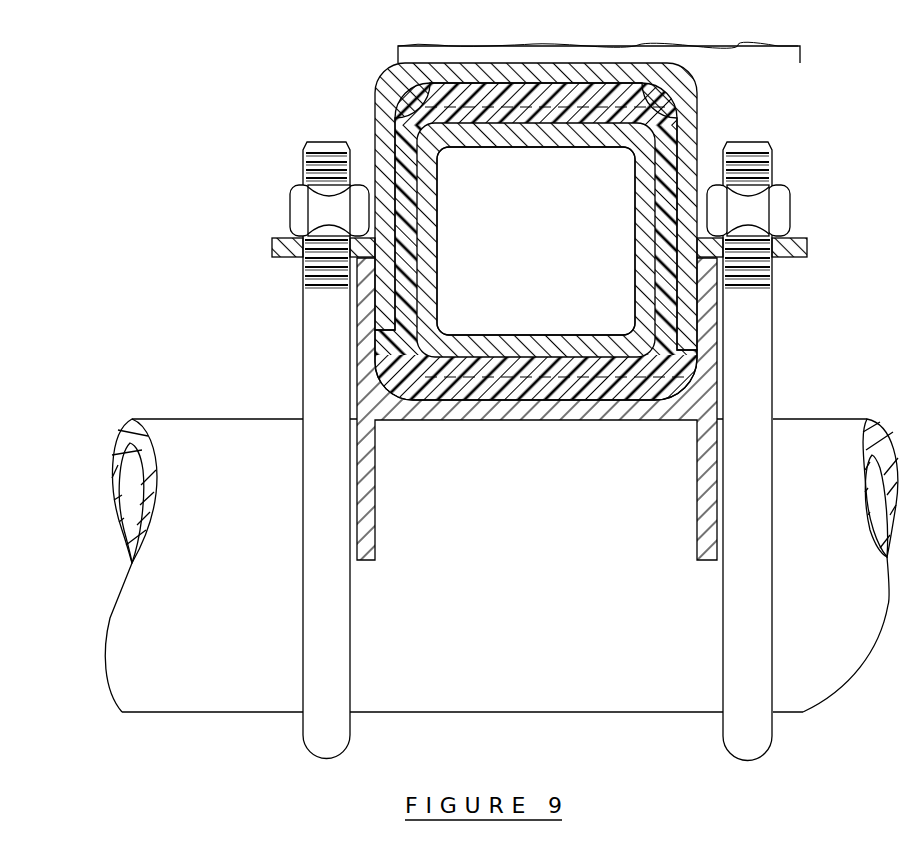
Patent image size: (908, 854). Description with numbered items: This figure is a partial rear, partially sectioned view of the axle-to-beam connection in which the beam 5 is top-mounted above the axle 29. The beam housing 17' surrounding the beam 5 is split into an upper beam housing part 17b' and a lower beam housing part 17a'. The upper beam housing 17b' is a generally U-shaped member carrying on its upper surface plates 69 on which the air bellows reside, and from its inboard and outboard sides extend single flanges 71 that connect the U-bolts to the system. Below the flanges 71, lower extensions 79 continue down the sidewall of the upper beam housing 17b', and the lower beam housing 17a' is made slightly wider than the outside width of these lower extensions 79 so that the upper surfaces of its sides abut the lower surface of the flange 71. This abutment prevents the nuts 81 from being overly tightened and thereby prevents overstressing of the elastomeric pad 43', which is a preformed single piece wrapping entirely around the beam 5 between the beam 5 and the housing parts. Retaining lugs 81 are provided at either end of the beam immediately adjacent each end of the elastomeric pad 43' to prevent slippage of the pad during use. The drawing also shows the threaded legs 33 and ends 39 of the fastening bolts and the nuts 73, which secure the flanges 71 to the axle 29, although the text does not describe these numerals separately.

The beam 5 is at (440, 303).
The beam housing 17' is at (592, 260).
The lower beam housing part 17a' is at (537, 409).
The upper beam housing part 17b' is at (592, 210).
The axle 29 is at (837, 688).
The U-bolt legs 33 is at (337, 737).
The threaded bolt ends 39 is at (373, 97).
The elastomeric pad 43' is at (524, 333).
The plates 69 is at (800, 50).
The flanges 71 is at (288, 218).
The nut 73 is at (298, 208).
The lower extensions 79 is at (385, 275).
The nuts 81 is at (613, 103).